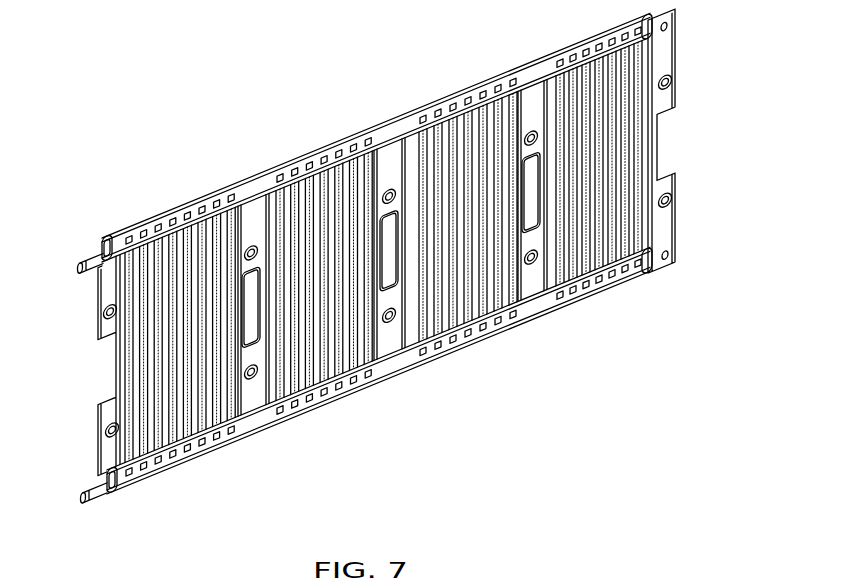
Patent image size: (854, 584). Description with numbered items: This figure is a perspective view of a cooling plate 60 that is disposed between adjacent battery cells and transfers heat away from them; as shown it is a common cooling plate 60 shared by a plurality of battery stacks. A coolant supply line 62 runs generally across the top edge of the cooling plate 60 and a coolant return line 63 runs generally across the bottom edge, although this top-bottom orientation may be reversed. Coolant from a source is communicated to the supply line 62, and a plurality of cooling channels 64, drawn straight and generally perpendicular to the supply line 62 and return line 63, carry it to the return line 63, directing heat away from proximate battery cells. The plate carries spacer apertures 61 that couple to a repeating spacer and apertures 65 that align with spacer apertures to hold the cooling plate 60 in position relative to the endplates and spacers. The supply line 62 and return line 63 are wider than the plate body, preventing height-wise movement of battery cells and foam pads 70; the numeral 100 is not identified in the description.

The cooling plate 60 is at (136, 128).
The spacer apertures 61 is at (277, 186).
The coolant supply line 62 is at (78, 270).
The coolant return line 63 is at (82, 494).
The cooling channels 64 is at (152, 462).
The apertures 65 is at (103, 315).
The foam pads 70 is at (642, 583).
The assembly 100 is at (742, 583).